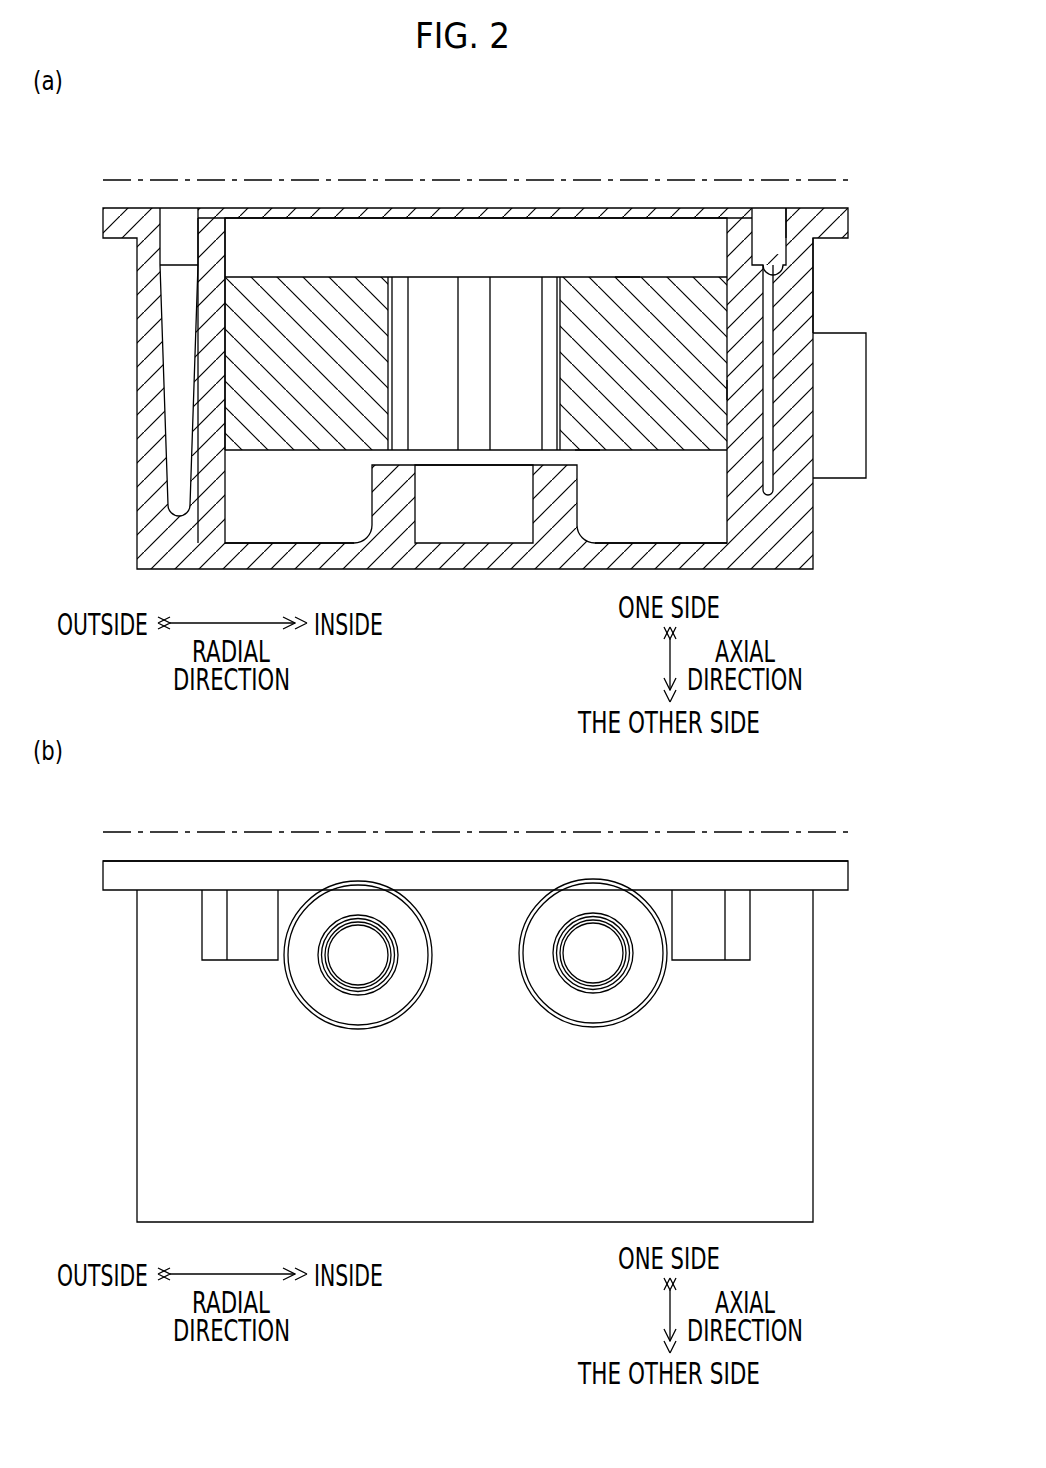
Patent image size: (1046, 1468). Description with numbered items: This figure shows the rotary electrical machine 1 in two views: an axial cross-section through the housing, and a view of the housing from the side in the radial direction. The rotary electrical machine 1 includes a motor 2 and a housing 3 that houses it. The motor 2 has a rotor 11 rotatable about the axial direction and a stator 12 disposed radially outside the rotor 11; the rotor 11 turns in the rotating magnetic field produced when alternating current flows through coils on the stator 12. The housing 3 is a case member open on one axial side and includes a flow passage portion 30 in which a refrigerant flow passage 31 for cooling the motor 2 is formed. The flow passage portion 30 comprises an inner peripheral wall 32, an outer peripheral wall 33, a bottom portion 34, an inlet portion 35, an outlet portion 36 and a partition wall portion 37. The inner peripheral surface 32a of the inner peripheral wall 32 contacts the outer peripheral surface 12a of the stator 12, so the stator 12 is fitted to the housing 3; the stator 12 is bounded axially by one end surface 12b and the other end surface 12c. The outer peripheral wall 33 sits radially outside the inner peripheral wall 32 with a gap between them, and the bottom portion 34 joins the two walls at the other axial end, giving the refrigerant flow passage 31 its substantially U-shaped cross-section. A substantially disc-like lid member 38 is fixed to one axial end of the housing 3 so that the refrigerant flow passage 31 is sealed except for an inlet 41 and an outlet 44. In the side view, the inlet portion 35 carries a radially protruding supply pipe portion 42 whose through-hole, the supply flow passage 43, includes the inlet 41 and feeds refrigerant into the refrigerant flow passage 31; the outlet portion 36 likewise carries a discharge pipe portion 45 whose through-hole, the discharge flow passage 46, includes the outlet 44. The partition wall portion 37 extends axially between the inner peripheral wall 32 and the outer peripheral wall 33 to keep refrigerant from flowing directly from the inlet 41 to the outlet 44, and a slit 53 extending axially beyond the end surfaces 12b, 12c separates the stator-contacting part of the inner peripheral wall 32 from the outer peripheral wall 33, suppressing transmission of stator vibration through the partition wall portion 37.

The rotary electrical machine 1 is at (135, 133).
The motor 2 is at (508, 266).
The housing 3 is at (217, 205).
The rotor 11 is at (402, 285).
The stator 12 is at (290, 278).
The outer peripheral surface 12a is at (735, 392).
The one end surface 12b is at (625, 243).
The other end surface 12c is at (590, 476).
The flow passage portion 30 is at (822, 203).
The refrigerant flow passage 31 is at (178, 320).
The inner peripheral wall 32 is at (213, 478).
The inner peripheral surface 32a is at (250, 378).
The outer peripheral wall 33 is at (145, 368).
The bottom portion 34 is at (560, 546).
The inlet portion 35 is at (318, 884).
The outlet portion 36 is at (553, 1018).
The partition wall portion 37 is at (782, 272).
The lid member 38 is at (706, 190).
The inlet 41 is at (372, 940).
The supply pipe portion 42 is at (335, 1000).
The supply flow passage 43 is at (358, 985).
The outlet 44 is at (593, 925).
The discharge pipe portion 45 is at (597, 1015).
The discharge flow passage 46 is at (553, 953).
The slit 53 is at (755, 305).